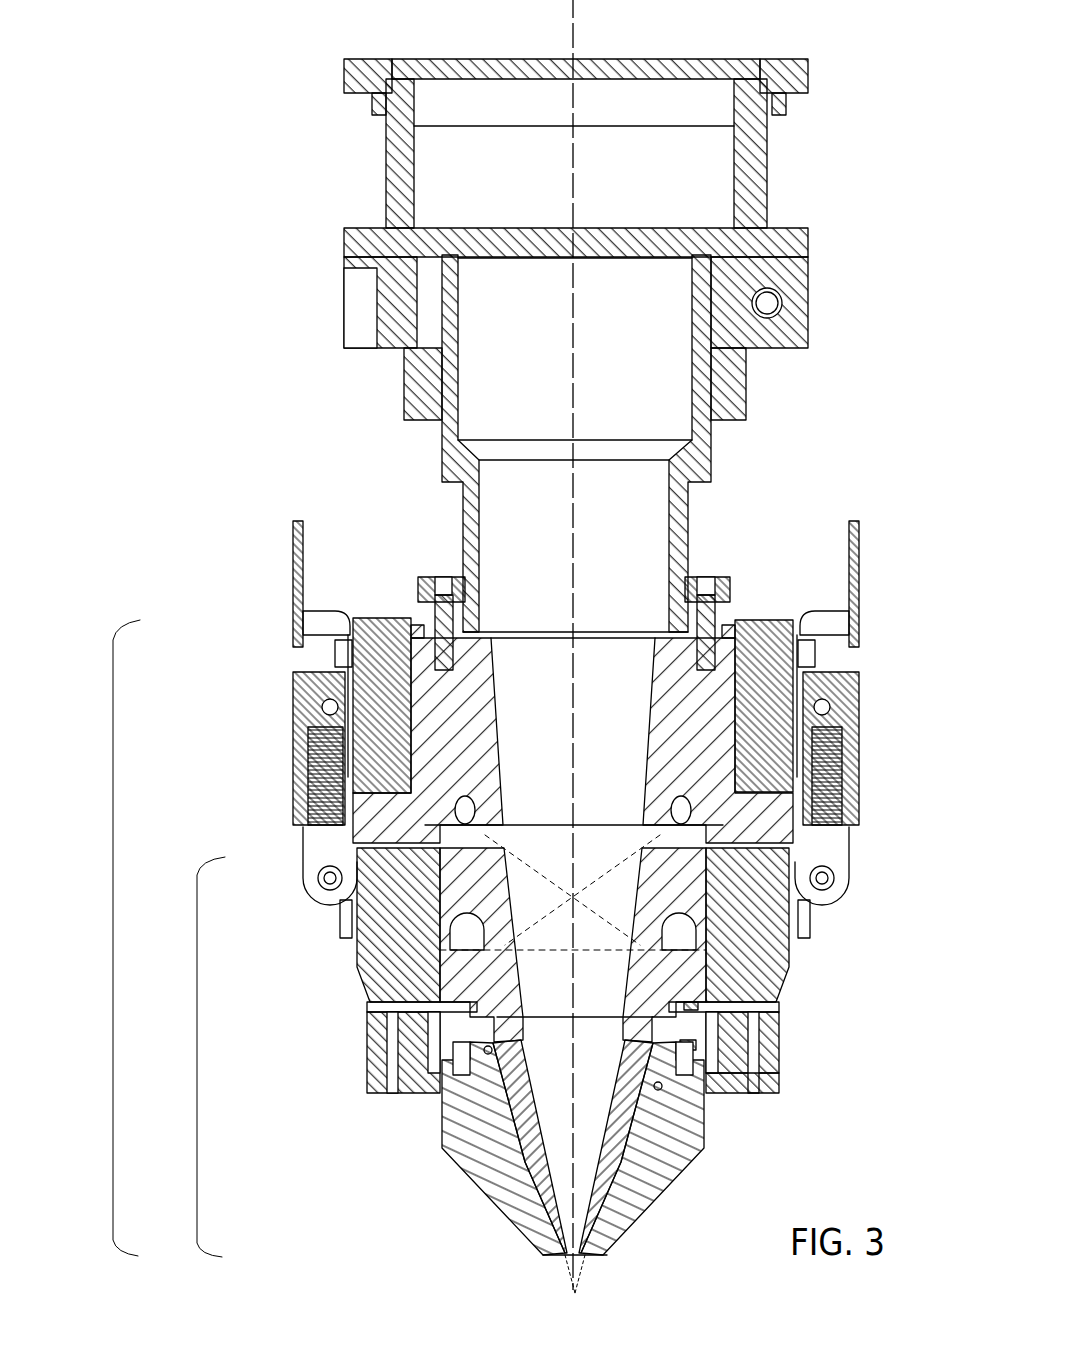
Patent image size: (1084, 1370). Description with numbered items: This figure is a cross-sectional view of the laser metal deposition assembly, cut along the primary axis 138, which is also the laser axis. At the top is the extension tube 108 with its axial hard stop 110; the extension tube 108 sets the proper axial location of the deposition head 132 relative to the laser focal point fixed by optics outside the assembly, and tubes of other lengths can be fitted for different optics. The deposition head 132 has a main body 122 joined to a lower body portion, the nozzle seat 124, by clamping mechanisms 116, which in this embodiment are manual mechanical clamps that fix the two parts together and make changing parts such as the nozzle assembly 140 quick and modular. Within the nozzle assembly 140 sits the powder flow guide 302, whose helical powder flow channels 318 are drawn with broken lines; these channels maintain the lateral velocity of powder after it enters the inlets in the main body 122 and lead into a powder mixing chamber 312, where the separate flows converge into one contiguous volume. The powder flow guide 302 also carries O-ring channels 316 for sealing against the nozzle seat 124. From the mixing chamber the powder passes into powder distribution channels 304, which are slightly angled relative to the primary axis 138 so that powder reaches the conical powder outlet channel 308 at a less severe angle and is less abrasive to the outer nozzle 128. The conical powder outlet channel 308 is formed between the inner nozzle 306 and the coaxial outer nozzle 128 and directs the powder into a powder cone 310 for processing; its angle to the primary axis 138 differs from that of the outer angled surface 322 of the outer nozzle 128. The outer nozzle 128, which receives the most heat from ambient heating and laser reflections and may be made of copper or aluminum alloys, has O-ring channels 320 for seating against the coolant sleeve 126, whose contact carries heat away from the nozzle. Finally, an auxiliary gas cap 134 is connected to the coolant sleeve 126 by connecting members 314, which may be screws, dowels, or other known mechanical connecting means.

The extension tube 108 is at (688, 515).
The axial hard stop 110 is at (805, 300).
The clamping mechanisms 116 is at (858, 790).
The main body 122 is at (420, 636).
The nozzle seat 124 is at (777, 980).
The coolant sleeve 126 is at (768, 1032).
The outer nozzle 128 is at (470, 1157).
The deposition head 132 is at (113, 938).
The auxiliary gas cap 134 is at (732, 1085).
The primary axis 138 is at (573, 365).
The nozzle assembly 140 is at (197, 1055).
The powder flow guide 302 is at (545, 845).
The powder distribution channels 304 is at (492, 1048).
The inner nozzle 306 is at (538, 1180).
The conical powder outlet channel 308 is at (605, 1217).
The powder cone 310 is at (585, 1268).
The powder mixing chamber 312 is at (470, 963).
The fastener 314 is at (390, 1045).
The O-ring channels 316 is at (445, 872).
The helical powder flow channels 318 is at (573, 980).
The O-ring channels 320 is at (688, 1008).
The outer angled surface 322 is at (655, 1200).